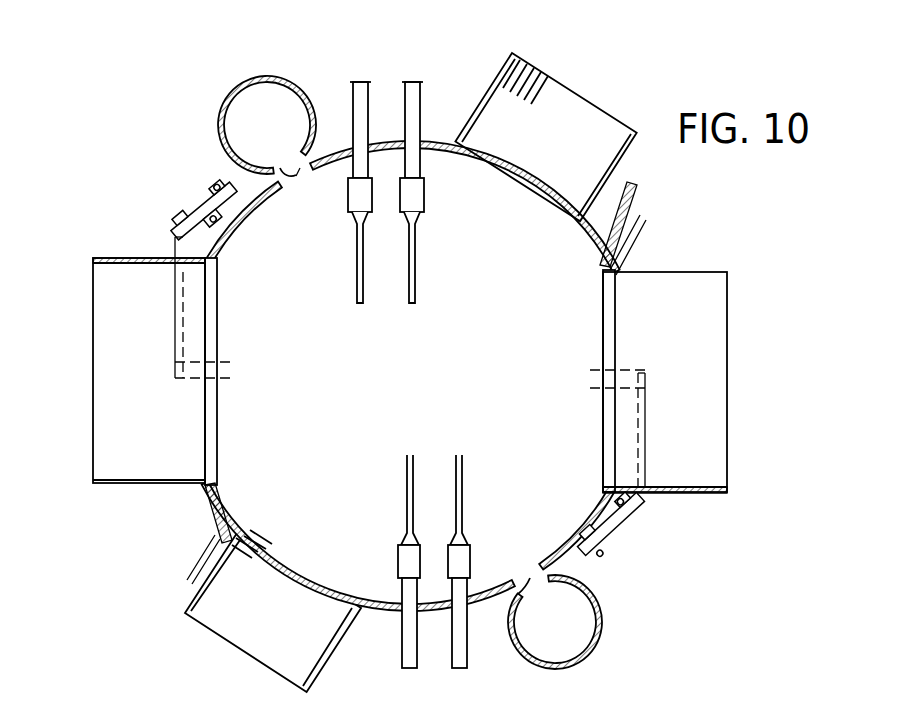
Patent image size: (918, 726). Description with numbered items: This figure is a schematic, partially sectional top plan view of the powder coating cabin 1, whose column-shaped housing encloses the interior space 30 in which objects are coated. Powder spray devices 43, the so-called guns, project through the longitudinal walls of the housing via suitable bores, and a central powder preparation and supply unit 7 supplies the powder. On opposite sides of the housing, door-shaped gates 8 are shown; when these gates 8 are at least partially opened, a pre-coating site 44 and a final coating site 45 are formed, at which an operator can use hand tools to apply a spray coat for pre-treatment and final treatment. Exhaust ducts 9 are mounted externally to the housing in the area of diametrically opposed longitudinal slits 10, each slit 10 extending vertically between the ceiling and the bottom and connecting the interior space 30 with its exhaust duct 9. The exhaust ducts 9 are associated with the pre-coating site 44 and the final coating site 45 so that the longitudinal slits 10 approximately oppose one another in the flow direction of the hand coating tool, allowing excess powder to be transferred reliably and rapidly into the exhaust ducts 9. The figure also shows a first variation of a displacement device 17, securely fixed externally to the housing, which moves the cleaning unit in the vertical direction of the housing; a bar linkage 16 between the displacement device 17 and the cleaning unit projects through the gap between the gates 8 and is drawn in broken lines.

The powder coating cabin 1 is at (440, 133).
The central powder preparation and supply unit 7 is at (555, 132).
The door-shaped gates 8 is at (130, 258).
The exhaust ducts 9 is at (248, 118).
The longitudinal slit 10 is at (290, 175).
The bar linkage 16 is at (178, 300).
The displacement device 17 is at (200, 215).
The interior space 30 is at (430, 398).
The powder spray devices 43 is at (368, 200).
The pre-coating site 44 is at (152, 372).
The final coating site 45 is at (675, 367).